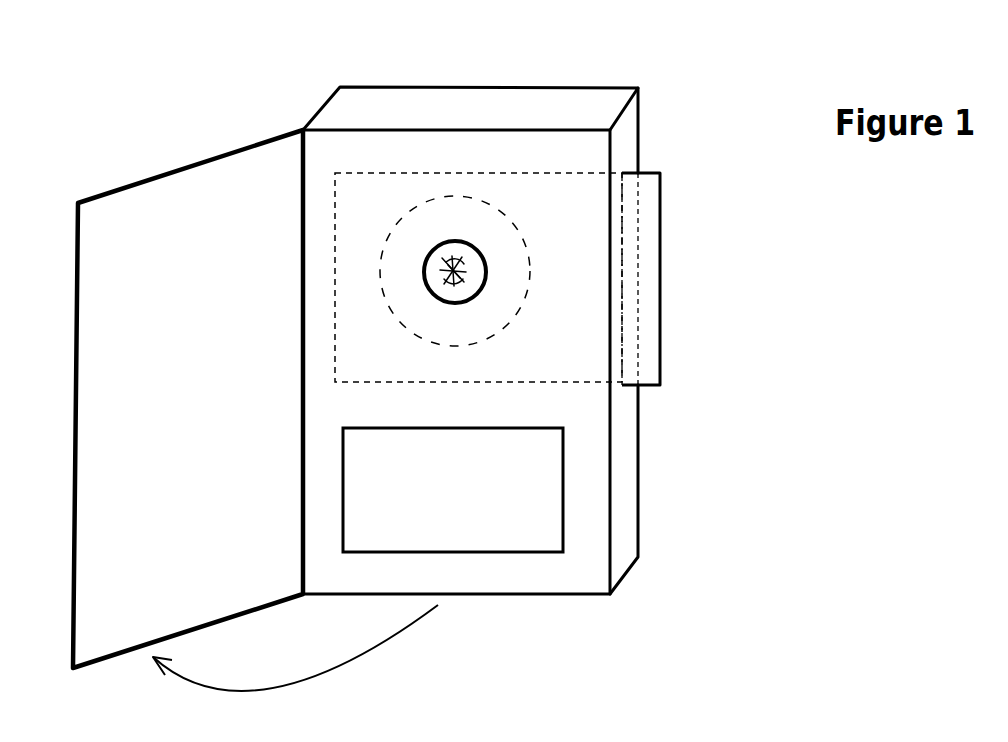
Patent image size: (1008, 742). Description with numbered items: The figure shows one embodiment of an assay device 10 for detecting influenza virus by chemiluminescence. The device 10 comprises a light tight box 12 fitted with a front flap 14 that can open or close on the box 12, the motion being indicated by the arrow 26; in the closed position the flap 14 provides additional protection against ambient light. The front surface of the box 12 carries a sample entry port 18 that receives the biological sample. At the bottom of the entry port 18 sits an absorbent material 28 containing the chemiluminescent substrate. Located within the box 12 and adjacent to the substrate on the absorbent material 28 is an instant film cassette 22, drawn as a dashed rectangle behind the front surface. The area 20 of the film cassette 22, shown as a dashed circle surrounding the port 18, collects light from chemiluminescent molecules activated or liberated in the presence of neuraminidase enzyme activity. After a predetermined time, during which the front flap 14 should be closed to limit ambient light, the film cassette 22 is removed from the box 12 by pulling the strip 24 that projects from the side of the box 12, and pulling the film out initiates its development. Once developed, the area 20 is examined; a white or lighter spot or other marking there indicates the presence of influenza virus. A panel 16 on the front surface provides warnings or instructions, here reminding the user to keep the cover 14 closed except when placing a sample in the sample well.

The device 10 is at (745, 443).
The light tight box 12 is at (452, 84).
The front flap 14 is at (170, 170).
The panel 16 is at (563, 490).
The sample entry port 18 is at (472, 302).
The area 20 is at (507, 218).
The instant film cassette 22 is at (361, 170).
The strip 24 is at (660, 252).
The arrow 26 is at (295, 665).
The absorbent material 28 is at (463, 273).